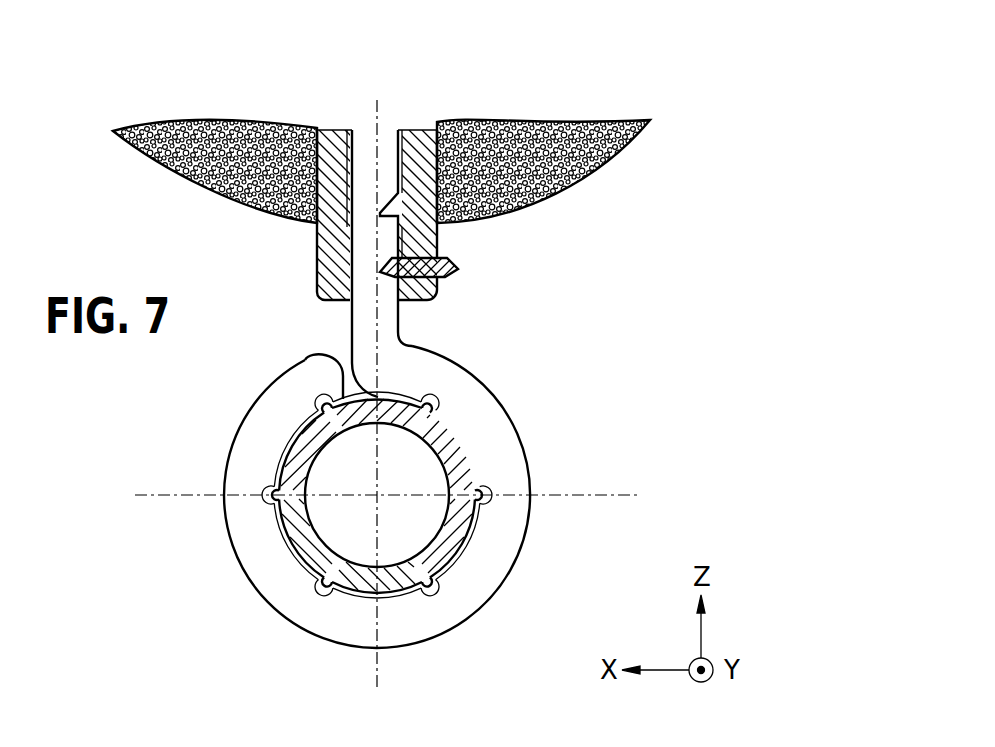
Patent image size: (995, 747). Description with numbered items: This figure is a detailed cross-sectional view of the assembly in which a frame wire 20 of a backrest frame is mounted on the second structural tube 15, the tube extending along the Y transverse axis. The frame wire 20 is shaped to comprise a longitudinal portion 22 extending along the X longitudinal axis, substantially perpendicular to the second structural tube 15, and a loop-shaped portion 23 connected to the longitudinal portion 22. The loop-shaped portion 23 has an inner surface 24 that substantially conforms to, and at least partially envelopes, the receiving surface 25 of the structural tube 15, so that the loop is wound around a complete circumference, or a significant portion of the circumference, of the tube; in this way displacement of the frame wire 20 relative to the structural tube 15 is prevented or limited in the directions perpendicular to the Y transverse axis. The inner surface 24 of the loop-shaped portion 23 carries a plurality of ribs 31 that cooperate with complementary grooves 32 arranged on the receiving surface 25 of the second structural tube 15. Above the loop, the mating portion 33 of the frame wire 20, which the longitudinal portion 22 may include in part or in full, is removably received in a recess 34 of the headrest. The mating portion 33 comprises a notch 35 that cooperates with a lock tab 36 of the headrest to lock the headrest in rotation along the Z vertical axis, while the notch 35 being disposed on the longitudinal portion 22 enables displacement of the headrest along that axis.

The second structural tube 15 is at (310, 562).
The frame wire 20 is at (415, 378).
The longitudinal portion 22 is at (381, 150).
The loop-shaped portion 23 is at (400, 627).
The inner surface 24 is at (478, 453).
The receiving surface 25 is at (460, 537).
The rib 31 is at (267, 483).
The complementary groove 32 is at (318, 396).
The mating portion 33 is at (362, 252).
The recess 34 is at (330, 230).
The notch 35 is at (437, 227).
The lock tab 36 is at (450, 277).